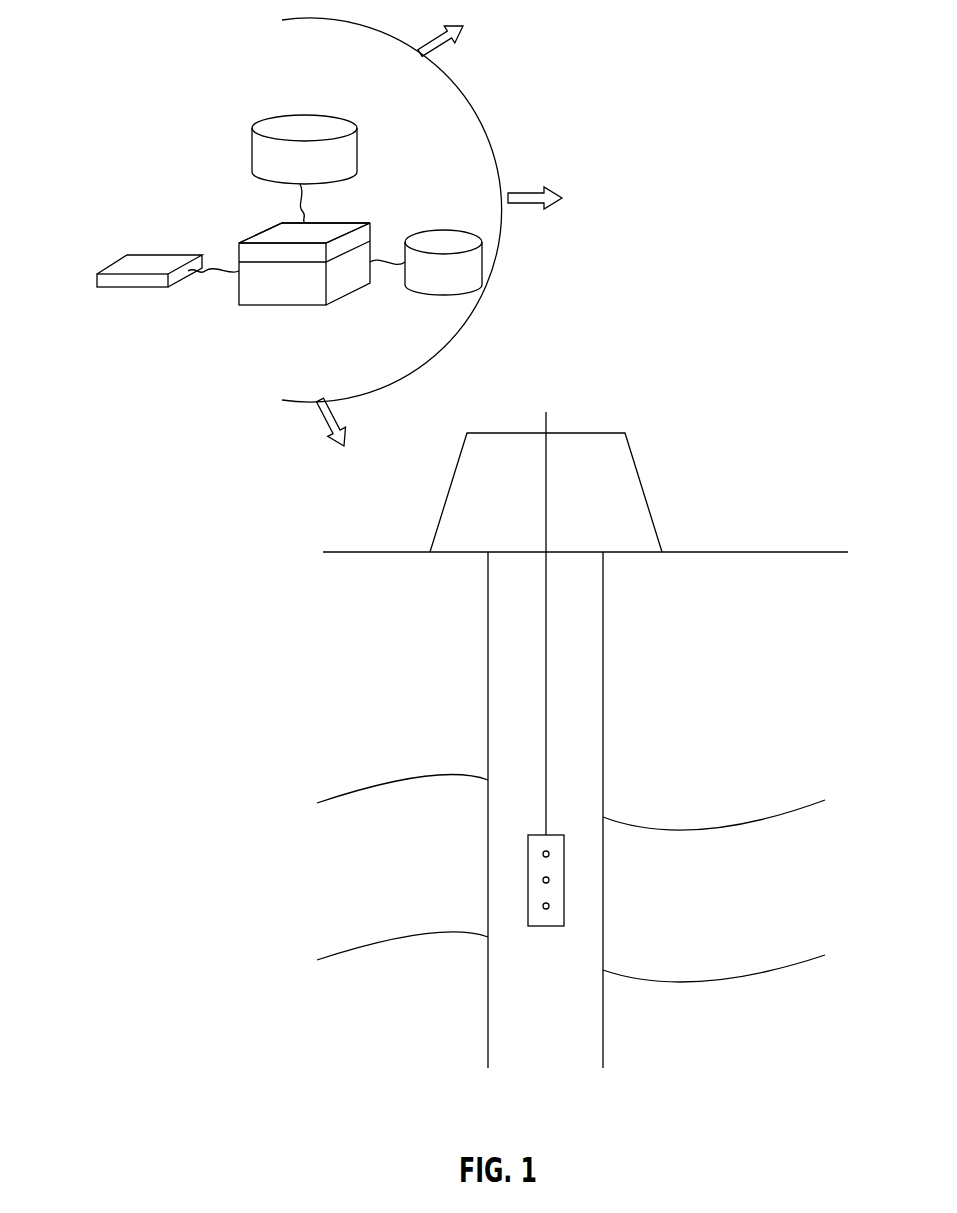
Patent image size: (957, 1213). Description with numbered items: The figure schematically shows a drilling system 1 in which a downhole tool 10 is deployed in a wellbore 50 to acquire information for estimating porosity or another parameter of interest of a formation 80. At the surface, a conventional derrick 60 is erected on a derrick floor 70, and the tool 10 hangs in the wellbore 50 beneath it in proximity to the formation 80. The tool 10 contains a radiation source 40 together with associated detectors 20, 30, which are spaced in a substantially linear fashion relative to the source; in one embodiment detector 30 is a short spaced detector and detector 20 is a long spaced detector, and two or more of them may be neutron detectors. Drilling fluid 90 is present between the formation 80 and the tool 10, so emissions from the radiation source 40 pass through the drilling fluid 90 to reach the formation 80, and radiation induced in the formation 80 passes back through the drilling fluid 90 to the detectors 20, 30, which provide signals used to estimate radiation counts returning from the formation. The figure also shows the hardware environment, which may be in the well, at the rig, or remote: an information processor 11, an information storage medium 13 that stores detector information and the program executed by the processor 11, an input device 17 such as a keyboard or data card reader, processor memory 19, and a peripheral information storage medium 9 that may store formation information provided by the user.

The drilling system 1 is at (682, 368).
The peripheral information storage medium 9 is at (432, 296).
The downhole tool 10 is at (546, 723).
The information processor 11 is at (267, 306).
The information storage medium 13 is at (252, 150).
The input device 17 is at (122, 290).
The processor memory 19 is at (260, 233).
The detector 20 is at (550, 854).
The detector 30 is at (550, 880).
The radiation source 40 is at (550, 906).
The wellbore 50 is at (603, 650).
The derrick 60 is at (643, 492).
The derrick floor 70 is at (635, 552).
The formation 80 is at (692, 843).
The drilling fluid 90 is at (510, 920).